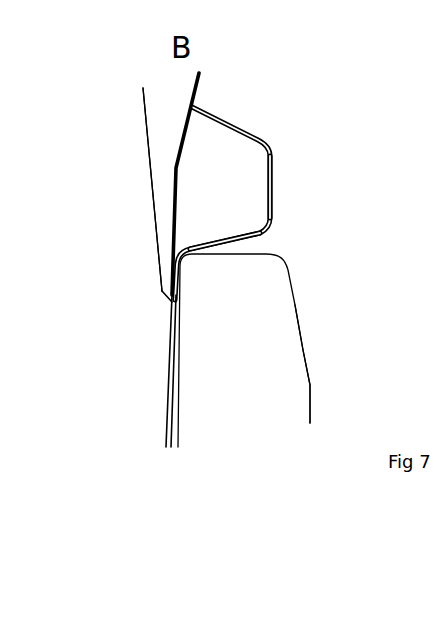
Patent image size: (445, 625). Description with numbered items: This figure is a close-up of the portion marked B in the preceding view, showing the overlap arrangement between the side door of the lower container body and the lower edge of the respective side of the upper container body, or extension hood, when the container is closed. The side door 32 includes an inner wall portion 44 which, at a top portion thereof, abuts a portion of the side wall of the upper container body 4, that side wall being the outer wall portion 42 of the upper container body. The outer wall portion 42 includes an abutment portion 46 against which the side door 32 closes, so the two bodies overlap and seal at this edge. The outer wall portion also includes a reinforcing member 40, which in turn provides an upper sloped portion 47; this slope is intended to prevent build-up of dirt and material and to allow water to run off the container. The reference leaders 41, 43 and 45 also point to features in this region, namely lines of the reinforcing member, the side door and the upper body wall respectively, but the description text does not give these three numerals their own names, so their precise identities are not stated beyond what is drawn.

The upper container body 4 is at (140, 118).
The side door 32 is at (318, 388).
The reinforcing member 40 is at (273, 228).
The lower leg of flange 41 is at (255, 249).
The outer wall portion 42 is at (201, 87).
The block 43 is at (297, 306).
The inner wall portion 44 is at (163, 393).
The sheet edge portion 45 is at (153, 210).
The abutment portion 46 is at (162, 290).
The upper sloped portion 47 is at (257, 139).